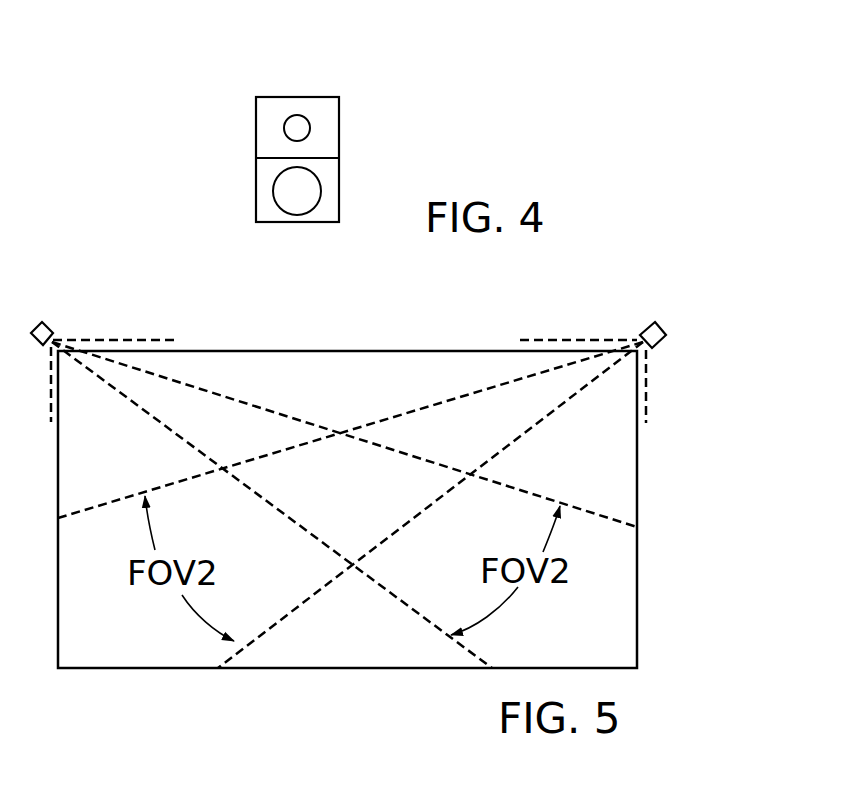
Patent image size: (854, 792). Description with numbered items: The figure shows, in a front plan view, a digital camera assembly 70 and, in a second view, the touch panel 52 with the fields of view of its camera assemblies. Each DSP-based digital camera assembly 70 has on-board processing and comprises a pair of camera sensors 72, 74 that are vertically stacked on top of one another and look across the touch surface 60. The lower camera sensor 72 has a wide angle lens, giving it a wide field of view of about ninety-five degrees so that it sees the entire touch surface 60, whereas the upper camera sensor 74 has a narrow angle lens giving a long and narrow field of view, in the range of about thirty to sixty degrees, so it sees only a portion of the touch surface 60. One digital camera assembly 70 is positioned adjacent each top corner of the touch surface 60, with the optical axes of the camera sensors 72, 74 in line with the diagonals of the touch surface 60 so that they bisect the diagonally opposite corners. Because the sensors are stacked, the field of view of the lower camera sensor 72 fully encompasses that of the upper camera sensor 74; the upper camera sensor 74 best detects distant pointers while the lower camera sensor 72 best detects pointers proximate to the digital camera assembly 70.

In FIG. 4, the digital camera assembly 70 is at (368, 104).
In FIG. 5, the digital camera assembly 70 is at (53, 329).
In FIG. 4, the lower camera sensor 72 is at (339, 198).
In FIG. 4, the upper camera sensor 74 is at (256, 131).
In FIG. 5, the display frame 52 is at (222, 694).
In FIG. 5, the touch surface 60 is at (360, 508).